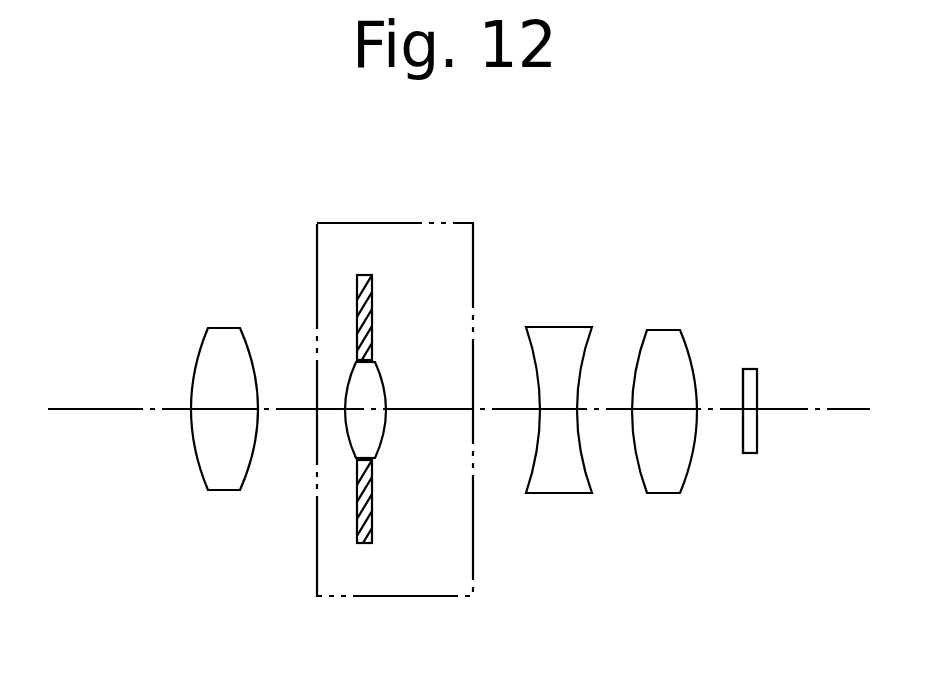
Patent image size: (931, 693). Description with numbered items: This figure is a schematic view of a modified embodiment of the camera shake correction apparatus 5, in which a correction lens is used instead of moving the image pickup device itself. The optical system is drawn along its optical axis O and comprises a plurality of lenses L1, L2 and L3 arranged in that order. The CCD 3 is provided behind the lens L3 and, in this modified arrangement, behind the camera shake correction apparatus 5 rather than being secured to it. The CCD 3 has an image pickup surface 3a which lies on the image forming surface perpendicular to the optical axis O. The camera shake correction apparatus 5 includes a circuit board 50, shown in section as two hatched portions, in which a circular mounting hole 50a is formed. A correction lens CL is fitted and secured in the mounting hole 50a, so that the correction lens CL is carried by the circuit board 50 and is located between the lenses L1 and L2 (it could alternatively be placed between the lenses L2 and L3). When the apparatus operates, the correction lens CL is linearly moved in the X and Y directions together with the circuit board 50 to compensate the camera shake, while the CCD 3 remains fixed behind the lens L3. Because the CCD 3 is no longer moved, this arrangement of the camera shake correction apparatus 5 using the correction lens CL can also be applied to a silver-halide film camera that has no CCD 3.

The optical axis O is at (112, 409).
The lens L1 is at (227, 353).
The camera shake correction apparatus 5 is at (398, 223).
The circuit board 50 is at (367, 288).
The circular mounting hole 50a is at (366, 374).
The correction lens CL is at (355, 427).
The lens L2 is at (560, 345).
The lens L3 is at (665, 348).
The CCD 3 is at (752, 380).
The image pickup surface 3a is at (744, 414).